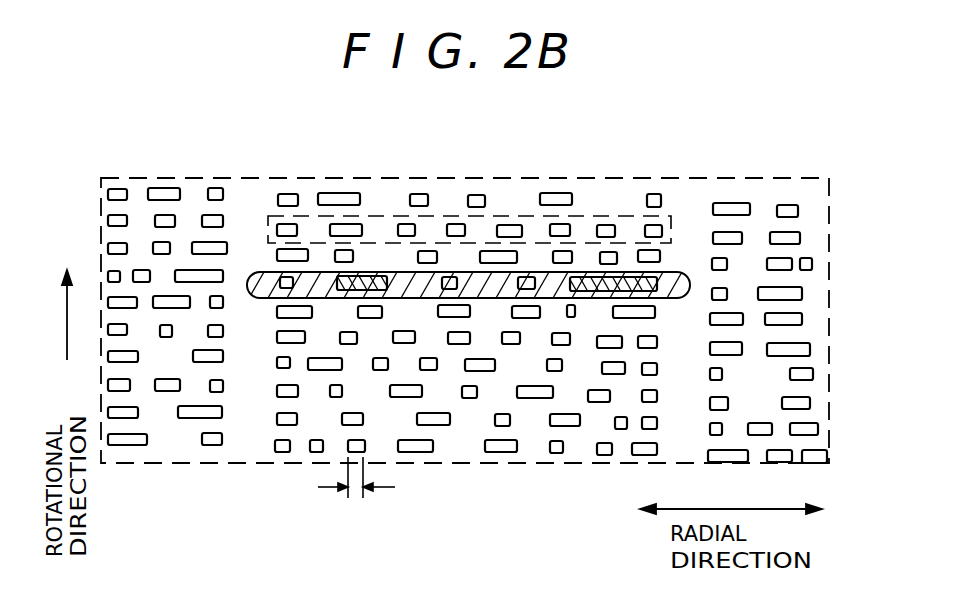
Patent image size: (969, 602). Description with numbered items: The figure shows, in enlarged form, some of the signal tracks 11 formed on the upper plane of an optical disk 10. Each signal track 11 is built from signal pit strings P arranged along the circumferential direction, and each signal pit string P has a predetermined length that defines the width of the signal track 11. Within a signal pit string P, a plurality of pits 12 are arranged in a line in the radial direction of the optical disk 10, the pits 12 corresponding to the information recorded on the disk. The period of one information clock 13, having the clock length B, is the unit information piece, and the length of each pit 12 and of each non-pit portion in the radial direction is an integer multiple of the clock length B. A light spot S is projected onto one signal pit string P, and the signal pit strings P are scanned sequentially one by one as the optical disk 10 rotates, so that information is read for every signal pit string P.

The optical disk 10 is at (797, 184).
The signal track 11 is at (660, 166).
The pit 12 is at (510, 453).
The period of one information clock 13 is at (350, 446).
The light spot S is at (262, 271).
The signal pit string P is at (672, 224).
The clock length B is at (356, 493).